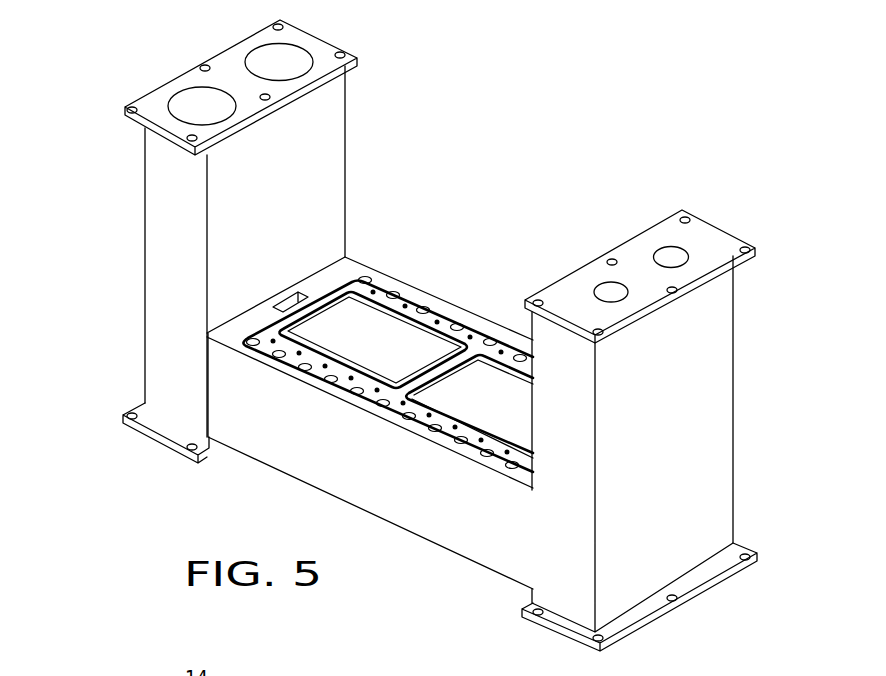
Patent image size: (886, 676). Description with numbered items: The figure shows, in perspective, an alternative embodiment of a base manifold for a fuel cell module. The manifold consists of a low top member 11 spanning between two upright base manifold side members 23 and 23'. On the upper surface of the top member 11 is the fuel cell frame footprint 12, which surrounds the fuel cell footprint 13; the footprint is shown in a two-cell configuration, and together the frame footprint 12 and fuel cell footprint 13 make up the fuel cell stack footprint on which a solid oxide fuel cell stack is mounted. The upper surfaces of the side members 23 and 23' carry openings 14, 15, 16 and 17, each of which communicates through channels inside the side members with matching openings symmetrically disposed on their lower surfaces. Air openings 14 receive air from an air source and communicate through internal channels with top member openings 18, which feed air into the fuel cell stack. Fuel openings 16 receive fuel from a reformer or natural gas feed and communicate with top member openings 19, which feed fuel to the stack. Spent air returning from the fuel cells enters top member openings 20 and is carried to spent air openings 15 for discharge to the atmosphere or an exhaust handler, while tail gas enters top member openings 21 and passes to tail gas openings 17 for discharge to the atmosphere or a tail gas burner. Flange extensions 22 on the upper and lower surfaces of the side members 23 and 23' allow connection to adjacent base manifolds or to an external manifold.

The top member 11 is at (346, 267).
The fuel cell frame footprint 12 is at (323, 300).
The fuel cell footprint 13 is at (363, 310).
The air openings 14 is at (278, 62).
The spent air openings 15 is at (190, 100).
The fuel openings 16 is at (670, 255).
The tail gas openings 17 is at (608, 287).
The top member openings 18 is at (459, 327).
The top member openings 19 is at (502, 352).
The top member openings 20 is at (385, 402).
The top member openings 21 is at (378, 391).
The flange extensions 22 is at (122, 110).
The base manifold side member 23 is at (669, 444).
The base manifold side member 23' is at (195, 251).